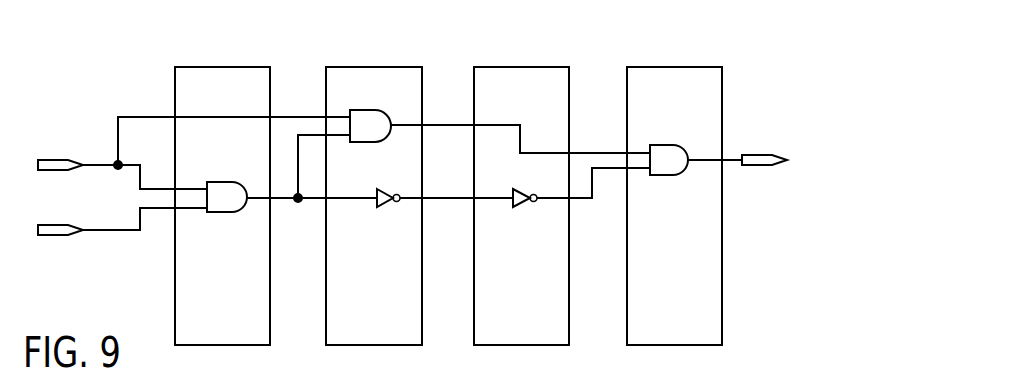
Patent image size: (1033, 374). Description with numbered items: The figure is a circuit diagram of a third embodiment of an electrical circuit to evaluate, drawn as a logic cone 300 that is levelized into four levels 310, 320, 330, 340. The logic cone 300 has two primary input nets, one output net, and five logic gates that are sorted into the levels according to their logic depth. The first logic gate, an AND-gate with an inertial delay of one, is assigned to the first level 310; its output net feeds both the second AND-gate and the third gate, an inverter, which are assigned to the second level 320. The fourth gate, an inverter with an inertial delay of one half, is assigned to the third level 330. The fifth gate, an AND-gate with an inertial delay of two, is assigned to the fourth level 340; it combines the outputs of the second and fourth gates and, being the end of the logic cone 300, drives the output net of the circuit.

The logic cone 300 is at (758, 63).
The first level 310 is at (210, 78).
The second level 320 is at (342, 75).
The third level 330 is at (522, 75).
The fourth level 340 is at (663, 77).